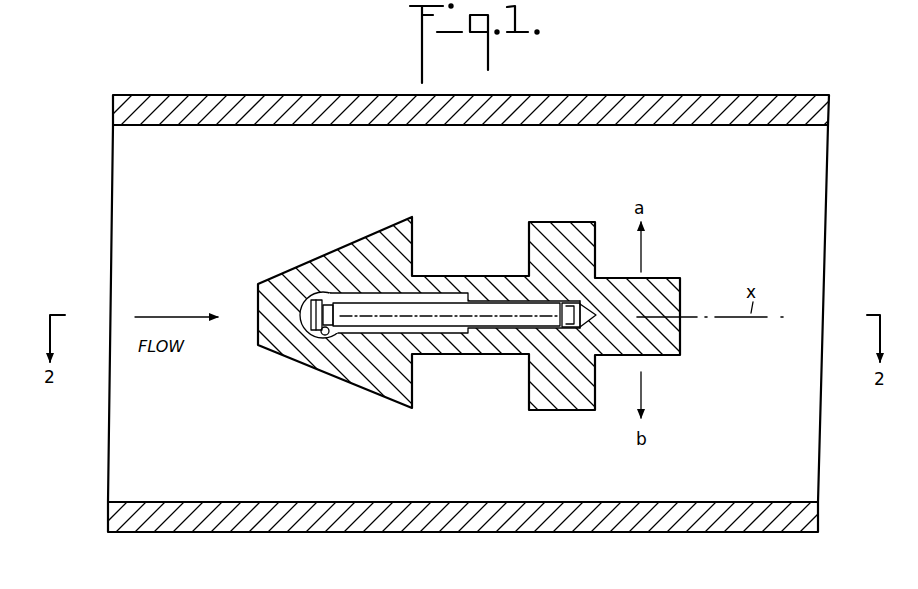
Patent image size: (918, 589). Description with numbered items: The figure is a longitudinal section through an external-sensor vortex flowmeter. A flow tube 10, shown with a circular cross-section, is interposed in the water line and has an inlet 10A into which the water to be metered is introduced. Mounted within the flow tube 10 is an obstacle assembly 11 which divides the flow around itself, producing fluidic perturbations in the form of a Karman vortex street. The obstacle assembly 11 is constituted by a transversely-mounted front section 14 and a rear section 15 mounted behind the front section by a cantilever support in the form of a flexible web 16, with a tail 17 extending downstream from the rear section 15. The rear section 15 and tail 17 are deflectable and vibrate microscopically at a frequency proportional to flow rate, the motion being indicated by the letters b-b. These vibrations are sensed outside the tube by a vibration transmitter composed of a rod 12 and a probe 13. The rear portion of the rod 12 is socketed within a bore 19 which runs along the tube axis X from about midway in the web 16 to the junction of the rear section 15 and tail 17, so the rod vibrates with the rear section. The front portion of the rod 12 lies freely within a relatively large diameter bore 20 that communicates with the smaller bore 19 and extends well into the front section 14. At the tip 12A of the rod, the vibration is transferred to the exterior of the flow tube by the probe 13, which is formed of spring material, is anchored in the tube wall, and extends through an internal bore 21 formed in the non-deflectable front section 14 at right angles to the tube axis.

The flow tube 10 is at (634, 530).
The inlet 10A is at (96, 466).
The obstacle assembly 11 is at (434, 244).
The rod 12 is at (492, 320).
The tip of the rod 12A is at (317, 292).
The probe 13 is at (325, 335).
The front section 14 is at (345, 247).
The rear section 15 is at (575, 222).
The flexible web 16 is at (477, 275).
The tail 17 is at (673, 278).
The bore 19 is at (578, 300).
The bore 20 is at (427, 333).
The internal bore 21 is at (300, 321).